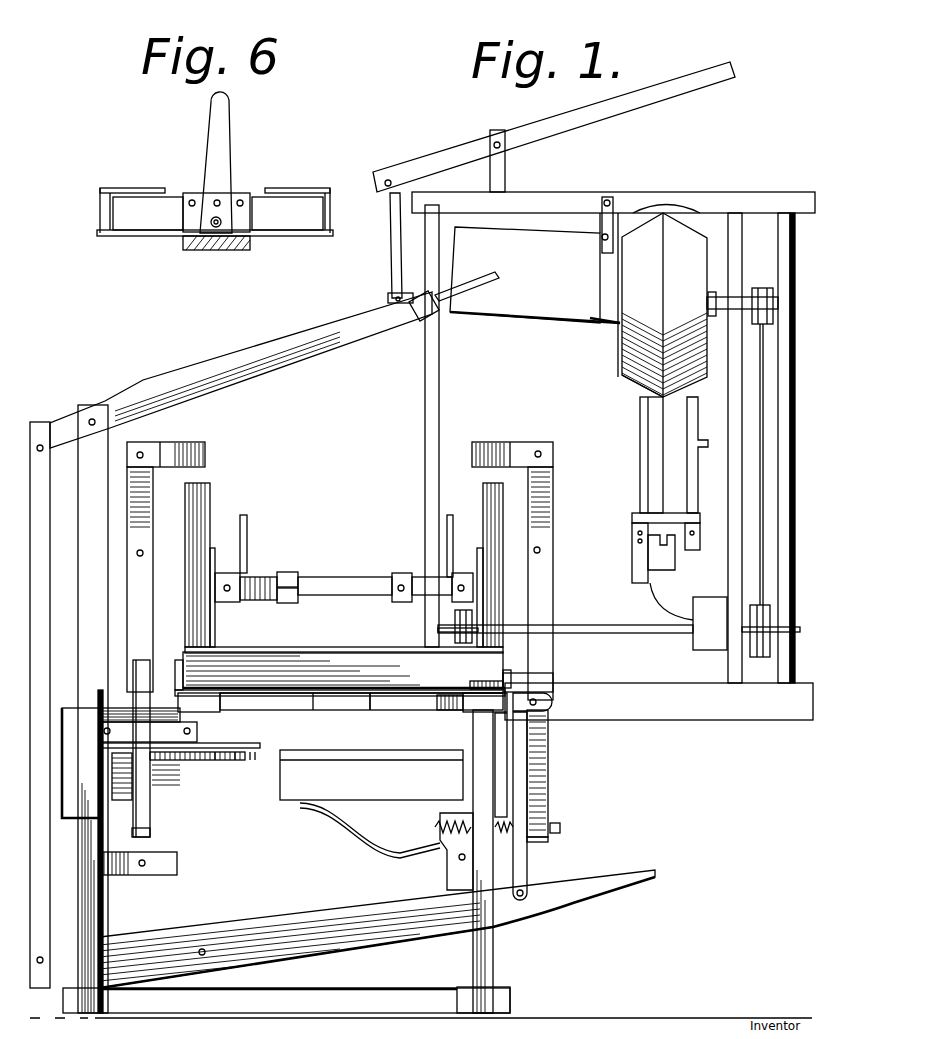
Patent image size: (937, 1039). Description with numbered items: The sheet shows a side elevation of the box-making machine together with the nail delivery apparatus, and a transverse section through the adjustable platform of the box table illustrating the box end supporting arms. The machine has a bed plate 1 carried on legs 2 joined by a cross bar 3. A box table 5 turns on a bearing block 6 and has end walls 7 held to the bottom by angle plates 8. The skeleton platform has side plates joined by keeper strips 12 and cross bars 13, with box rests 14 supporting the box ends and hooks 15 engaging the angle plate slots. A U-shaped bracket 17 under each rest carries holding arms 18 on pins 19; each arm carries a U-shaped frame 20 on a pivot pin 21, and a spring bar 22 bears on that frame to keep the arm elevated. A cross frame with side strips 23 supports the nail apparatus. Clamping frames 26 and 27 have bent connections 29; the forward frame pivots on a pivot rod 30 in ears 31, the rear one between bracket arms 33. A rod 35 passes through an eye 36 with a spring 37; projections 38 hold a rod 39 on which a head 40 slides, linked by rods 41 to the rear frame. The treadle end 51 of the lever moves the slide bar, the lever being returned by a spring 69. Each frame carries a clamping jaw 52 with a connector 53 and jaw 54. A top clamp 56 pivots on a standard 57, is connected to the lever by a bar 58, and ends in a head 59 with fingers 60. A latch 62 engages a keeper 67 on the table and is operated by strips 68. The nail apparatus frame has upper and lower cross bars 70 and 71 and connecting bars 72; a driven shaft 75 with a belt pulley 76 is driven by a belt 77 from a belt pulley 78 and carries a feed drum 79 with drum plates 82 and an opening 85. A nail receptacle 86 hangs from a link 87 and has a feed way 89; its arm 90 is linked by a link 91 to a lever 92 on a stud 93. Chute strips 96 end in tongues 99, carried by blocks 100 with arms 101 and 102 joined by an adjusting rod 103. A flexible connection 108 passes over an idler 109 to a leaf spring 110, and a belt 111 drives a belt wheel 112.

In FIG. 1, the bed plate 1 is at (285, 740).
In FIG. 1, the legs 2 is at (103, 912).
In FIG. 1, the cross bar 3 is at (110, 1003).
In FIG. 1, the box support or table 5 is at (344, 638).
In FIG. 1, the bearing block 6 is at (326, 711).
In FIG. 1, the end walls 7 is at (210, 498).
In FIG. 1, the angle plates 8 is at (215, 558).
In FIG. 1, the keeper strips 12 is at (290, 574).
In FIG. 6, the cross bars 13 is at (290, 193).
In FIG. 6, the box rests 14 is at (135, 193).
In FIG. 1, the box rests 14 is at (228, 602).
In FIG. 6, the hooks 15 is at (100, 218).
In FIG. 6, the U-shaped bracket 17 is at (220, 250).
In FIG. 6, the holding arms 18 is at (228, 123).
In FIG. 1, the holding arms 18 is at (248, 545).
In FIG. 6, the pins 19 is at (221, 200).
In FIG. 6, the U-shaped frame 20 is at (211, 225).
In FIG. 6, the pivot pin 21 is at (236, 221).
In FIG. 6, the spring bar 22 is at (150, 236).
In FIG. 1, the side strips 23 is at (222, 706).
In FIG. 1, the forward clamping frame 26 is at (153, 588).
In FIG. 1, the rear clamping frame 27 is at (386, 706).
In FIG. 1, the connection 29 is at (151, 843).
In FIG. 1, the pivot rod 30 is at (549, 745).
In FIG. 1, the ears 31 is at (554, 702).
In FIG. 1, the bracket arms 33 is at (560, 828).
In FIG. 1, the rod 35 is at (178, 870).
In FIG. 1, the eye 36 is at (543, 842).
In FIG. 1, the spring 37 is at (437, 826).
In FIG. 1, the projections 38 is at (168, 770).
In FIG. 1, the rod 39 is at (258, 762).
In FIG. 1, the head 40 is at (250, 765).
In FIG. 1, the rods 41 is at (235, 765).
In FIG. 1, the treadle end 51 is at (603, 892).
In FIG. 1, the clamping jaw 52 is at (180, 444).
In FIG. 1, the connector 53 is at (215, 765).
In FIG. 1, the jaw 54 is at (206, 455).
In FIG. 1, the top clamp 56 is at (316, 348).
In FIG. 1, the standard 57 is at (92, 405).
In FIG. 1, the bar 58 is at (40, 422).
In FIG. 1, the cross strip or head 59 is at (445, 318).
In FIG. 1, the fingers 60 is at (478, 288).
In FIG. 1, the latch 62 is at (507, 690).
In FIG. 1, the keeper 67 is at (180, 660).
In FIG. 1, the strips 68 is at (528, 787).
In FIG. 1, the spring 69 is at (418, 940).
In FIG. 1, the upper cross bar 70 is at (552, 196).
In FIG. 1, the lower cross bar 71 is at (659, 701).
In FIG. 1, the connecting bars 72 is at (425, 415).
In FIG. 1, the driven shaft 75 is at (710, 297).
In FIG. 1, the belt pulley 76 is at (760, 288).
In FIG. 1, the belt 77 is at (765, 500).
In FIG. 1, the belt pulley 78 is at (771, 645).
In FIG. 1, the feed drum 79 is at (670, 207).
In FIG. 1, the drum plates 82 is at (665, 295).
In FIG. 1, the opening 85 is at (615, 310).
In FIG. 1, the nail receptacle 86 is at (535, 275).
In FIG. 1, the link 87 is at (613, 203).
In FIG. 1, the feed way 89 is at (603, 324).
In FIG. 1, the arm 90 is at (388, 298).
In FIG. 1, the link 91 is at (395, 258).
In FIG. 1, the lever 92 is at (662, 95).
In FIG. 1, the stud 93 is at (498, 130).
In FIG. 1, the metallic strips 96 is at (652, 442).
In FIG. 1, the tongues 99 is at (632, 540).
In FIG. 1, the blocks 100 is at (647, 590).
In FIG. 1, the arm 101 is at (632, 568).
In FIG. 1, the arm 102 is at (690, 532).
In FIG. 1, the adjusting rod 103 is at (645, 513).
In FIG. 1, the flexible connection 108 is at (470, 713).
In FIG. 1, the idler 109 is at (440, 708).
In FIG. 1, the leaf spring 110 is at (387, 762).
In FIG. 1, the belt 111 is at (473, 645).
In FIG. 1, the belt wheel 112 is at (458, 648).